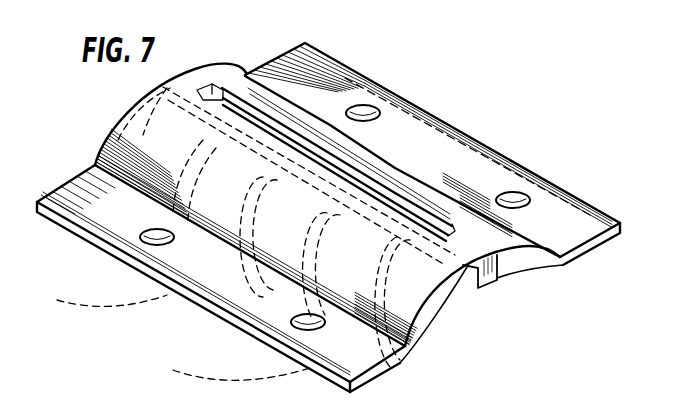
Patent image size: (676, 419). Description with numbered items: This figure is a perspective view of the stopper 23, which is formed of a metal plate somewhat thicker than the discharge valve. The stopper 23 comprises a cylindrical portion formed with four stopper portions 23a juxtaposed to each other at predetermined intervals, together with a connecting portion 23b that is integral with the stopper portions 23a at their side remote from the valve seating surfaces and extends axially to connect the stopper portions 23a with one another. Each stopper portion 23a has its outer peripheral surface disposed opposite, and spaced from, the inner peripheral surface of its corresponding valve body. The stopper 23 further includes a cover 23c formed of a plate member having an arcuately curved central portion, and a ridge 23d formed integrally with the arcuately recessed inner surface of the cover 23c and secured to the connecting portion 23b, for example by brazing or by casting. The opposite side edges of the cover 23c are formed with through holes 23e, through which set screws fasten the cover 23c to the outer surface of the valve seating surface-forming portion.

The stopper 23 is at (372, 60).
The stopper portions 23a is at (127, 247).
The connecting portion 23b is at (221, 64).
The cover 23c is at (113, 126).
The ridge 23d is at (497, 280).
The through holes 23e is at (513, 192).